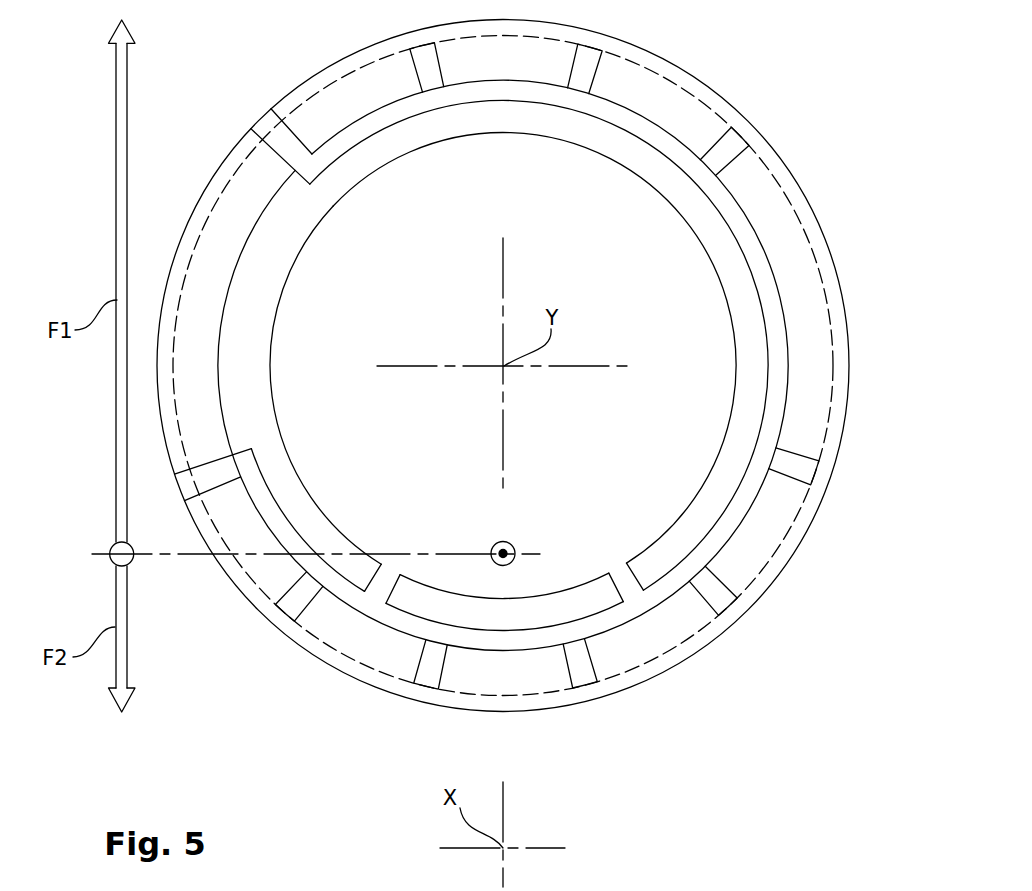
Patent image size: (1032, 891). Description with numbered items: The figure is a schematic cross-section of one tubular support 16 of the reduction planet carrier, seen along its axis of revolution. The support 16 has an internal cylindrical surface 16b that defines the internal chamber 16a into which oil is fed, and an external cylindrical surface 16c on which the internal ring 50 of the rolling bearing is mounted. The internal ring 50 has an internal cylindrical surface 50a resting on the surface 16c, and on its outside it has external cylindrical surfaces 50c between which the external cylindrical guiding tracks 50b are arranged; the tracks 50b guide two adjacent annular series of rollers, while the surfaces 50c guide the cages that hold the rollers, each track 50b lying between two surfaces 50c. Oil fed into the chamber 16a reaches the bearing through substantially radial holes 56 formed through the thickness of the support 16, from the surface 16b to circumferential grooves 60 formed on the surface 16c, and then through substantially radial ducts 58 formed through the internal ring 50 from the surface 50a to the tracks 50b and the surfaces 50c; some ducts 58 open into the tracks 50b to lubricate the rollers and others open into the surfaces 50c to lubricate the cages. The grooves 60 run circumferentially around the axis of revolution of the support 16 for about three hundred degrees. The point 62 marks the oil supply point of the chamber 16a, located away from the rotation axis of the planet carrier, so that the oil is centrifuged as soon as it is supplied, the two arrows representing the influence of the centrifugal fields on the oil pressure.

The internal ring 50 is at (531, 373).
The internal cylindrical surface 50a is at (617, 615).
The external cylindrical guiding tracks 50b is at (797, 543).
The external cylindrical surfaces 50c is at (814, 524).
The ducts 58 is at (790, 462).
The circumferential grooves 60 is at (780, 366).
The tubular support 16 is at (458, 431).
The internal chamber 16a is at (534, 347).
The internal cylindrical surface 16b is at (288, 277).
The external cylindrical surface 16c is at (525, 655).
The holes 56 is at (388, 572).
The oil supply point 62 is at (503, 547).